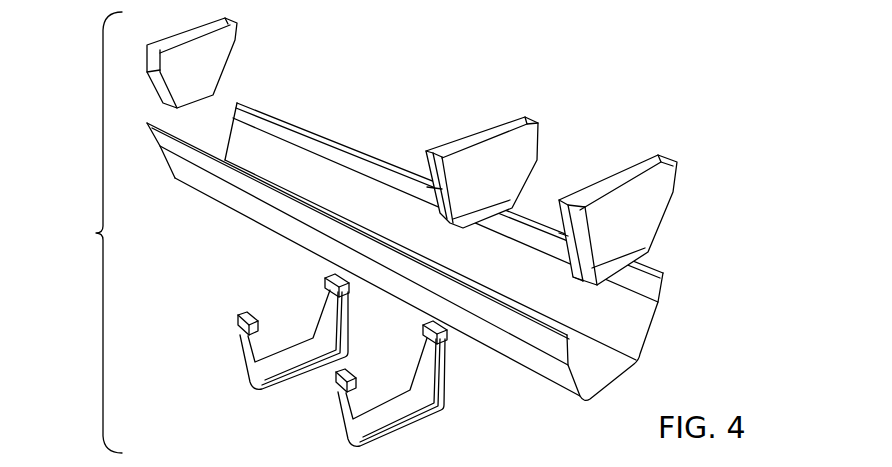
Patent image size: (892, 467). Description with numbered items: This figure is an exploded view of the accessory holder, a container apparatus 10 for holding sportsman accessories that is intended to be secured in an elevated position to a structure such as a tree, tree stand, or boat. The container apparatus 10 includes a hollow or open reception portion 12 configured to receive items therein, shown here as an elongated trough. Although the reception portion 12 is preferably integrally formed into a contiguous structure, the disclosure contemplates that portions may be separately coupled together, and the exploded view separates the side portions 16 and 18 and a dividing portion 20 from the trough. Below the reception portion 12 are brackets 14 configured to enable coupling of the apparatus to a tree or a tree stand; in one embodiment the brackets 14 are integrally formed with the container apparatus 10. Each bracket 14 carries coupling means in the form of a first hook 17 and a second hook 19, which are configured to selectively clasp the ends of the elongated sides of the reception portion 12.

The container apparatus 10 is at (92, 232).
The reception portion 12 is at (405, 200).
The bracket 14 is at (260, 300).
The side portion 16 is at (193, 52).
The first hook 17 is at (325, 290).
The side portion 18 is at (625, 185).
The second hook 19 is at (237, 322).
The dividing portion 20 is at (497, 150).